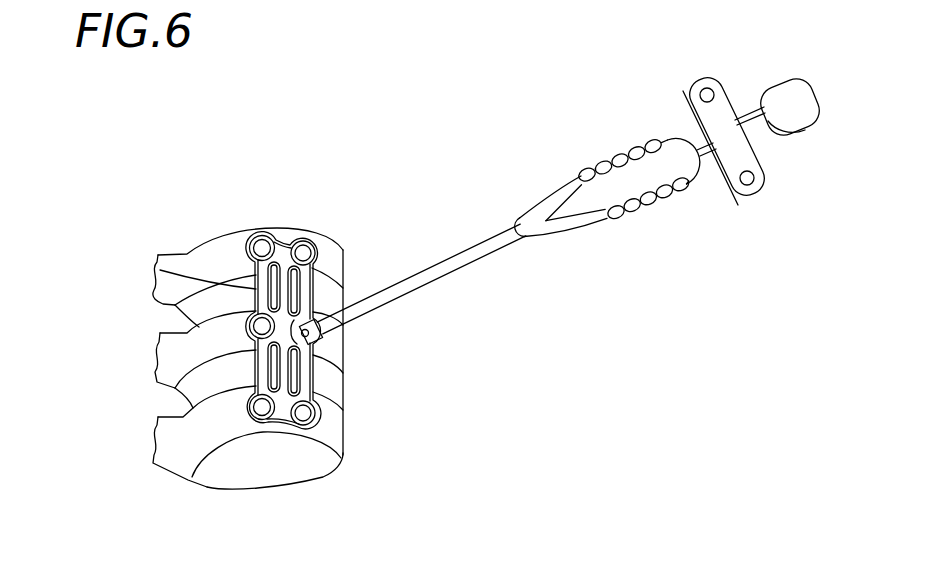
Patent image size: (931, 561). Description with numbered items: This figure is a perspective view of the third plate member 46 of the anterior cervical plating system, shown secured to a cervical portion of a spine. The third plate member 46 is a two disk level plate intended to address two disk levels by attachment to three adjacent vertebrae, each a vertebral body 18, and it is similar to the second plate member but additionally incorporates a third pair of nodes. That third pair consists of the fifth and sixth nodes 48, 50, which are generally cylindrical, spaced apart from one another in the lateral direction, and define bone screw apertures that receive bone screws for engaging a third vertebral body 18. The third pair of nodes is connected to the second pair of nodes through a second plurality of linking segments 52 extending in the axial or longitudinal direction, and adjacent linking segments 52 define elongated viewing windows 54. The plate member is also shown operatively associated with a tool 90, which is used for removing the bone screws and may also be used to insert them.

The vertebral body 18 is at (212, 263).
The third plate member 46 is at (282, 299).
The fifth node 48 is at (258, 233).
The sixth node 50 is at (304, 238).
The linking segments 52 is at (212, 246).
The elongated viewing windows 54 is at (160, 268).
The tool 90 is at (654, 231).